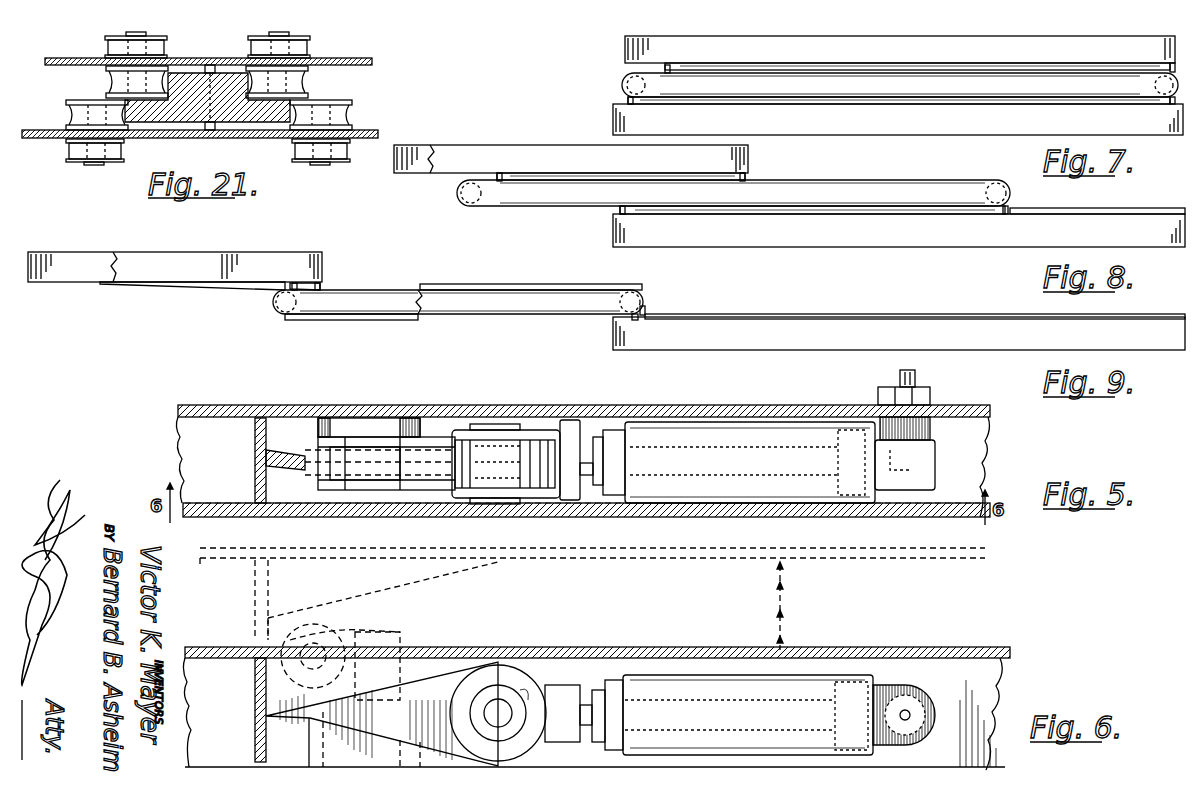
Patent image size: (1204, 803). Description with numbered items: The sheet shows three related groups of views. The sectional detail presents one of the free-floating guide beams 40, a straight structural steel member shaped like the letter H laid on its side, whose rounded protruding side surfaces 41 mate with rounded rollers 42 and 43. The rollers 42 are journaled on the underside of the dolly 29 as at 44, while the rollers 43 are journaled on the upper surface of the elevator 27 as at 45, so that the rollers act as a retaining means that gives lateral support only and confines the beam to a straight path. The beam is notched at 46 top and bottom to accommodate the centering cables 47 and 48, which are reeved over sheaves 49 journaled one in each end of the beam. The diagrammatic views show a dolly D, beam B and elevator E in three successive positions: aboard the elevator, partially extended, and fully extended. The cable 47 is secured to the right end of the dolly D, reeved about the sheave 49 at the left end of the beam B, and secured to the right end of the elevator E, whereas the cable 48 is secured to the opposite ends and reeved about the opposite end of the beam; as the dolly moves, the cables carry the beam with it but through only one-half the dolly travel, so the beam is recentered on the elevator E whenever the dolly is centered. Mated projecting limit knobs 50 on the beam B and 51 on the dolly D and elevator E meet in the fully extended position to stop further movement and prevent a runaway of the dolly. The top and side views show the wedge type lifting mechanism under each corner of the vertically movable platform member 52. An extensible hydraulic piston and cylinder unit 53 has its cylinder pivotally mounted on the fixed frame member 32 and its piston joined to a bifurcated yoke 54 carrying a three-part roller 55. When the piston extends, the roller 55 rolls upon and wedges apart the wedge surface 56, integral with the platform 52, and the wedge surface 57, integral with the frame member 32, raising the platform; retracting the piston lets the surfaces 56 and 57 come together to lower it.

In FIG. 21, the elevator 27 is at (378, 134).
In FIG. 21, the dolly 29 is at (372, 62).
In FIG. 21, the free-floating beam 40 is at (145, 130).
In FIG. 21, the protruding side surface 41 is at (160, 78).
In FIG. 21, the roller 42 is at (106, 69).
In FIG. 21, the roller 43 is at (66, 104).
In FIG. 21, the roller journal on dolly 44 is at (115, 42).
In FIG. 21, the roller journal on elevator 45 is at (70, 150).
In FIG. 21, the notch 46 is at (210, 65).
In FIG. 21, the centering cable 47 is at (203, 68).
In FIG. 7, the centering cable 47 is at (866, 64).
In FIG. 8, the centering cable 47 is at (596, 178).
In FIG. 9, the centering cable 47 is at (292, 286).
In FIG. 21, the centering cable 48 is at (216, 68).
In FIG. 7, the centering cable 48 is at (806, 64).
In FIG. 8, the centering cable 48 is at (534, 178).
In FIG. 9, the centering cable 48 is at (242, 285).
In FIG. 7, the sheave 49 is at (646, 85).
In FIG. 8, the sheave 49 is at (483, 193).
In FIG. 9, the sheave 49 is at (297, 302).
In FIG. 7, the limit knob 50 is at (668, 65).
In FIG. 8, the limit knob 50 is at (500, 178).
In FIG. 9, the limit knob 50 is at (294, 282).
In FIG. 7, the limit knob 51 is at (632, 104).
In FIG. 8, the limit knob 51 is at (746, 178).
In FIG. 9, the limit knob 51 is at (322, 284).
In FIG. 5, the vertically movable platform member 52 is at (362, 517).
In FIG. 6, the vertically movable platform member 52 is at (232, 548).
In FIG. 5, the hydraulic piston and cylinder unit 53 is at (688, 422).
In FIG. 6, the hydraulic piston and cylinder unit 53 is at (636, 648).
In FIG. 5, the bifurcated yoke 54 is at (570, 420).
In FIG. 6, the bifurcated yoke 54 is at (390, 632).
In FIG. 5, the three-part roller 55 is at (522, 430).
In FIG. 6, the three-part roller 55 is at (340, 620).
In FIG. 5, the wedge surface 56 is at (286, 452).
In FIG. 6, the wedge surface 56 is at (430, 584).
In FIG. 5, the wedge surface 57 is at (376, 468).
In FIG. 6, the wedge surface 57 is at (384, 730).
In FIG. 5, the fixed frame member 32 is at (212, 405).
In FIG. 6, the fixed frame member 32 is at (214, 767).
In FIG. 7, the dolly D is at (878, 36).
In FIG. 8, the dolly D is at (534, 145).
In FIG. 9, the dolly D is at (193, 253).
In FIG. 7, the elevator E is at (872, 136).
In FIG. 8, the elevator E is at (896, 248).
In FIG. 9, the elevator E is at (826, 351).
In FIG. 7, the beam B is at (852, 85).
In FIG. 8, the beam B is at (812, 181).
In FIG. 9, the beam B is at (502, 291).